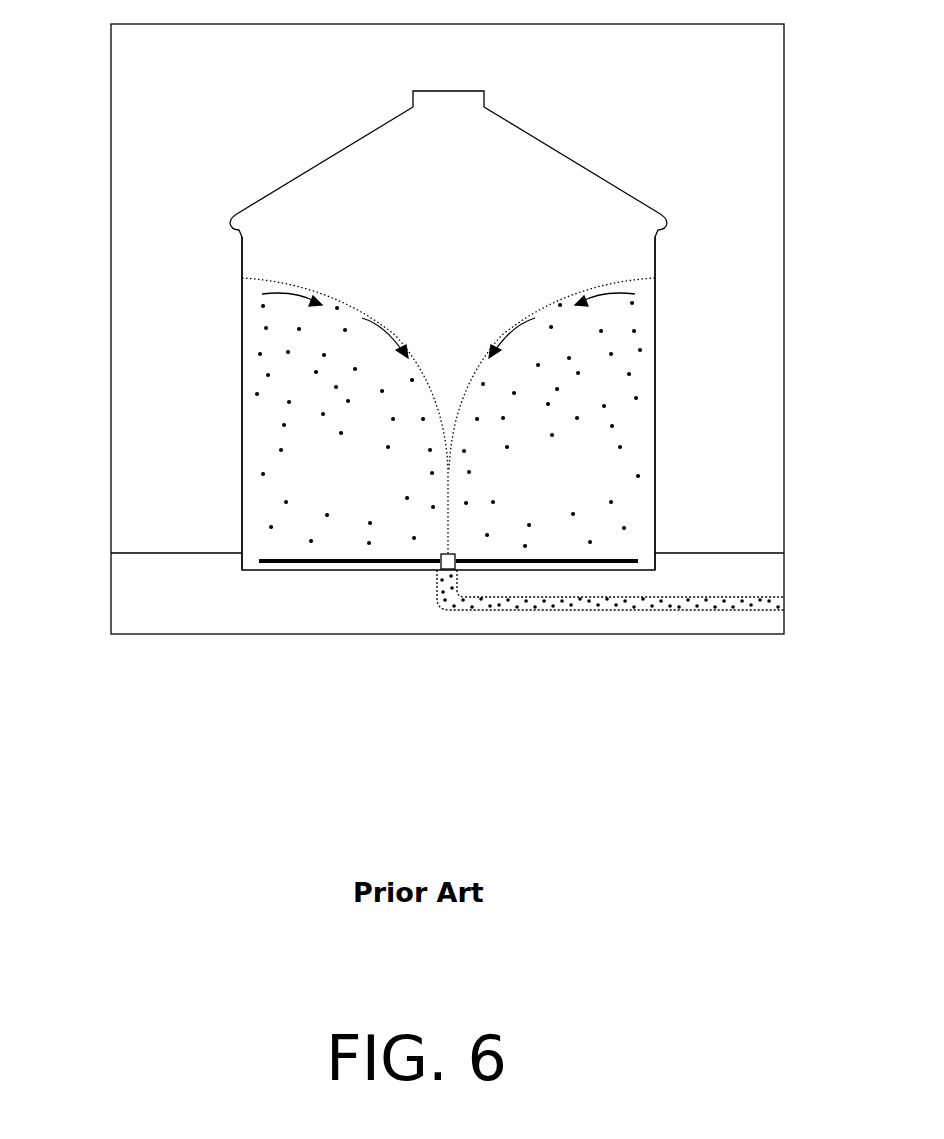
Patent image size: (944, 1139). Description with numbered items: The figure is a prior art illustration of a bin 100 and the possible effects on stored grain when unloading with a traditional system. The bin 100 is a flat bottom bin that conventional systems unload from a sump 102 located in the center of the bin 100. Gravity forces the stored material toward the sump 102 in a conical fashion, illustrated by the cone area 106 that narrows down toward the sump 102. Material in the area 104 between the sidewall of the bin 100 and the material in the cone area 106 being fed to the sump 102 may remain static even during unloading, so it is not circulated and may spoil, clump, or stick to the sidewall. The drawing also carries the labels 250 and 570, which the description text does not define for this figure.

The bin 100 is at (426, 171).
The sump 102 is at (445, 600).
The area 104 is at (364, 475).
The cone area 106 is at (447, 357).
The bottom plate 250 is at (329, 572).
The silo wall 570 is at (655, 247).